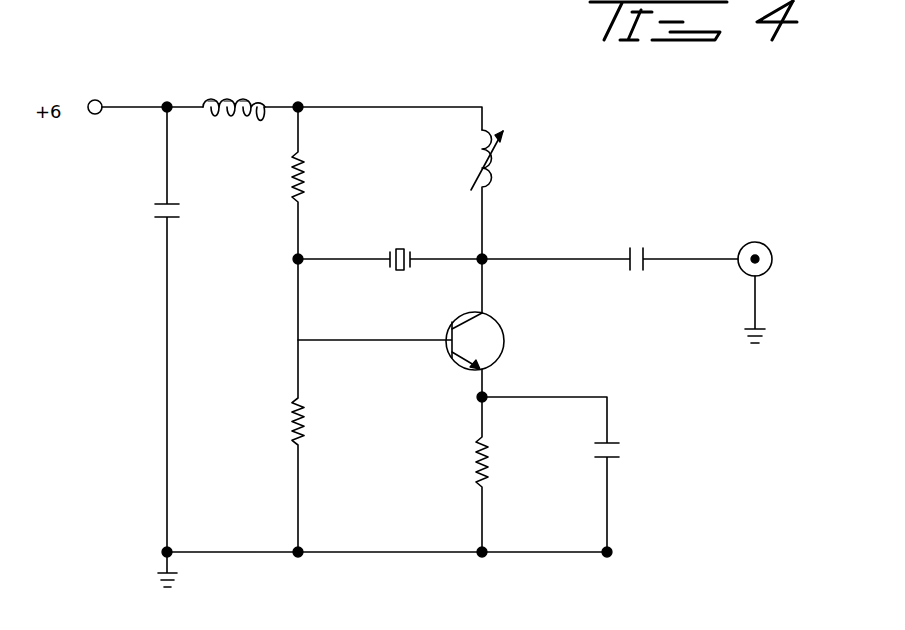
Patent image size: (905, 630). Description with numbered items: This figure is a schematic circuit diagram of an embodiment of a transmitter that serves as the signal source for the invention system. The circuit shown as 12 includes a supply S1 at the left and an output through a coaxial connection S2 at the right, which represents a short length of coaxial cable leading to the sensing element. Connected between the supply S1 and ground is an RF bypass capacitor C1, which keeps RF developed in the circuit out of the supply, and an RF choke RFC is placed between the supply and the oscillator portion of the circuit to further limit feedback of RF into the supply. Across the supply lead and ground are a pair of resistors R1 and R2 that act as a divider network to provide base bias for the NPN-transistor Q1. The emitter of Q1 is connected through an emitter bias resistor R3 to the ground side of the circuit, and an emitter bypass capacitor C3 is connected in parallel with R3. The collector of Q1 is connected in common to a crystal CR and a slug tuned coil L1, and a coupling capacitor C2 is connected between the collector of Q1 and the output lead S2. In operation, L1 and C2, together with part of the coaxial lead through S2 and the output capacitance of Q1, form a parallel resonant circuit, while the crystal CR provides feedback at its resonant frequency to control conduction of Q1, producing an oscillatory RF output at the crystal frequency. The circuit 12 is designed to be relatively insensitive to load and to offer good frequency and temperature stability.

The transmitting circuit 12 is at (427, 605).
The supply S1 is at (101, 101).
The RF choke RFC is at (226, 97).
The RF bypass capacitor C1 is at (166, 218).
The resistor R1 is at (300, 181).
The resistor R2 is at (296, 440).
The crystal CR is at (401, 249).
The slug tuned coil L1 is at (490, 188).
The NPN-transistor Q1 is at (458, 369).
The emitter bias resistor R3 is at (484, 478).
The emitter bypass capacitor C3 is at (606, 442).
The coupling capacitor C2 is at (643, 270).
The transmitter output lead S2 is at (771, 248).